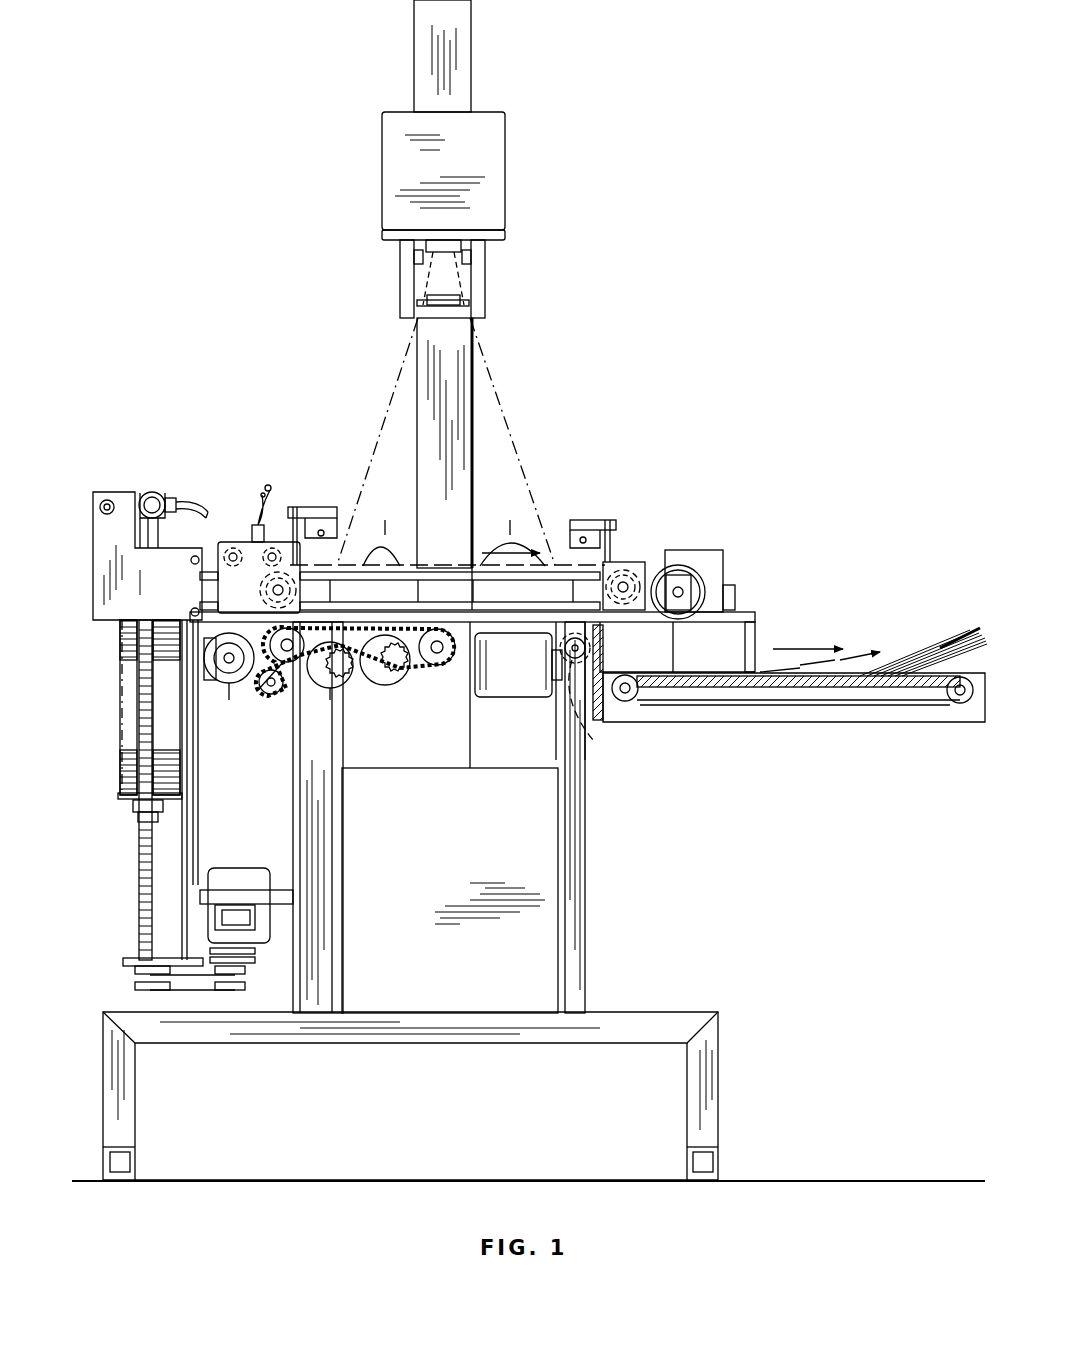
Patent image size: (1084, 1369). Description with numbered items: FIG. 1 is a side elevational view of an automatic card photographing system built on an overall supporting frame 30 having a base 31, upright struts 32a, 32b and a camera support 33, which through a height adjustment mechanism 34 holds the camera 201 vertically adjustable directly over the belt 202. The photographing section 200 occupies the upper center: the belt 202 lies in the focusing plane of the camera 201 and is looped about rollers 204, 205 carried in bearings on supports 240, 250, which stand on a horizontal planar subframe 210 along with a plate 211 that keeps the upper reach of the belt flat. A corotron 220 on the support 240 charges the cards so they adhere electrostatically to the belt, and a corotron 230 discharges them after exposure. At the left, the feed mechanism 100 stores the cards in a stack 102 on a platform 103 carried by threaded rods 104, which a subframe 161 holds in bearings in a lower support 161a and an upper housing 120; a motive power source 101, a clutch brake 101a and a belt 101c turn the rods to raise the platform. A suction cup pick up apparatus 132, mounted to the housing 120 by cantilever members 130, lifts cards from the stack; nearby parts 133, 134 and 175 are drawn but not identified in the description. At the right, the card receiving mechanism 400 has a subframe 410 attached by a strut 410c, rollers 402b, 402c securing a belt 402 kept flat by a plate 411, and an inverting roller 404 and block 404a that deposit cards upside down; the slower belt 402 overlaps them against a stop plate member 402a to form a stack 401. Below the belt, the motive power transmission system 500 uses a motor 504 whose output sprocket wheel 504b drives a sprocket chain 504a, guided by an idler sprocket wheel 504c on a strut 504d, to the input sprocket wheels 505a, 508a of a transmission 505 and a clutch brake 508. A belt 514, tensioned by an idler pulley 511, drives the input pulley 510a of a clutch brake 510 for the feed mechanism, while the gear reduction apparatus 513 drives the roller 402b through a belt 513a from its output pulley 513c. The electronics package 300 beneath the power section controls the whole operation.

The supporting frame 30 is at (480, 437).
The base 31 is at (625, 1015).
The upright strut 32a is at (587, 830).
The upright strut 32b is at (335, 842).
The camera support 33 is at (430, 374).
The height adjustment mechanism 34 is at (487, 270).
The feed mechanism 100 is at (135, 490).
The motive power source 101 is at (238, 866).
The clutch brake 101a is at (250, 915).
The belt 101c is at (190, 992).
The stack of cards 102 is at (120, 678).
The platform 103 is at (123, 797).
The threaded rods 104 is at (140, 878).
The housing 120 is at (115, 612).
The cantilever members 130 is at (150, 491).
The suction cup pick up apparatus 132 is at (165, 497).
The pipe 133 is at (158, 535).
The nozzle 134 is at (196, 510).
The subframe 161 is at (185, 845).
The support 161a is at (130, 960).
The sensor 175 is at (255, 535).
The photographing section 200 is at (392, 308).
The camera 201 is at (490, 165).
The belt 202 is at (430, 575).
The roller 204 is at (250, 577).
The roller 205 is at (632, 578).
The horizontal planar subframe 210 is at (518, 665).
The plate 211 is at (470, 560).
The corotron 220 is at (318, 525).
The corotron 230 is at (585, 530).
The support 240 is at (278, 540).
The support 250 is at (628, 575).
The electronics package 300 is at (450, 890).
The card receiving mechanism 400 is at (848, 615).
The stack 401 is at (895, 650).
The belt 402 is at (812, 722).
The stop plate member 402a is at (973, 632).
The roller 402b is at (632, 694).
The roller 402c is at (955, 700).
The roller 404 is at (690, 590).
The block 404a is at (725, 562).
The subframe 410 is at (745, 724).
The strut 410c is at (755, 640).
The plate 411 is at (870, 705).
The motive power transmission system 500 is at (380, 688).
The motor 504 is at (490, 698).
The sprocket chain 504a is at (425, 670).
The motor output sprocket wheel 504b is at (470, 680).
The idler sprocket wheel 504c is at (282, 663).
The strut 504d is at (255, 628).
The transmission 505 is at (325, 690).
The input sprocket wheel 505a is at (338, 690).
The clutch brake 508 is at (420, 690).
The input sprocket wheel 508a is at (385, 690).
The clutch brake 510 is at (210, 660).
The input pulley 510a is at (232, 685).
The idler pulley 511 is at (270, 695).
The gear reduction apparatus 513 is at (590, 710).
The belt 513a is at (612, 680).
The output pulley 513c is at (562, 649).
The belt 514 is at (288, 690).